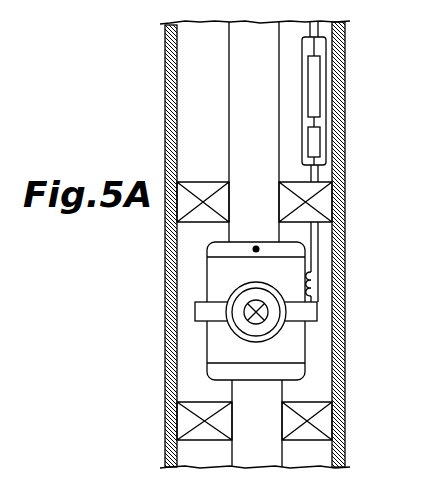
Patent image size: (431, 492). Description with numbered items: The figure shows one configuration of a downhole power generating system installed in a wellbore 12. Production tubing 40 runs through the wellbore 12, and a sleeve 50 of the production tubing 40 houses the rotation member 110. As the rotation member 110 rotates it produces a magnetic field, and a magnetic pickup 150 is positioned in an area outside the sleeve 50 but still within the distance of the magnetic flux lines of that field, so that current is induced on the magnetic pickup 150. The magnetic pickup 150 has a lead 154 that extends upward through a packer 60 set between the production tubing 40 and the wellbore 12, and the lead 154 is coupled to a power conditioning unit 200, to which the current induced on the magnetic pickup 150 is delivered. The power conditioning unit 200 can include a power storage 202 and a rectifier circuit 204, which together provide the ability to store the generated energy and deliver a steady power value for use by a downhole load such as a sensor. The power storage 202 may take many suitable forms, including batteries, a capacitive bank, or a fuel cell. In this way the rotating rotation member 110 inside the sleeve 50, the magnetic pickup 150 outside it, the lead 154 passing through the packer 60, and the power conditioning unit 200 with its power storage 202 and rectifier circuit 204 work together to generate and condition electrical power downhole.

The wellbore 12 is at (160, 116).
The production tubing 40 is at (228, 65).
The packer 60 is at (326, 204).
The power conditioning unit 200 is at (362, 98).
The rectifier circuit 204 is at (320, 92).
The power storage 202 is at (320, 146).
The lead 154 is at (318, 245).
The magnetic pickup 150 is at (318, 285).
The sleeve 50 is at (207, 268).
The rotation member 110 is at (278, 330).